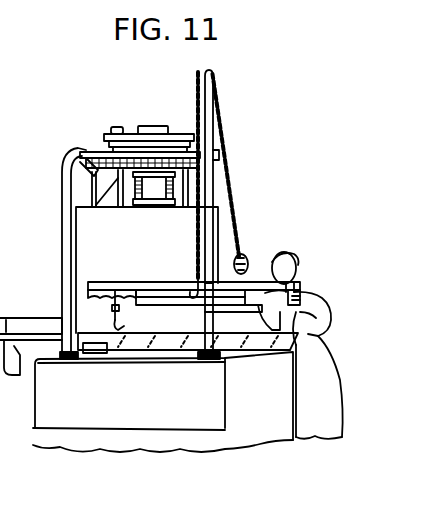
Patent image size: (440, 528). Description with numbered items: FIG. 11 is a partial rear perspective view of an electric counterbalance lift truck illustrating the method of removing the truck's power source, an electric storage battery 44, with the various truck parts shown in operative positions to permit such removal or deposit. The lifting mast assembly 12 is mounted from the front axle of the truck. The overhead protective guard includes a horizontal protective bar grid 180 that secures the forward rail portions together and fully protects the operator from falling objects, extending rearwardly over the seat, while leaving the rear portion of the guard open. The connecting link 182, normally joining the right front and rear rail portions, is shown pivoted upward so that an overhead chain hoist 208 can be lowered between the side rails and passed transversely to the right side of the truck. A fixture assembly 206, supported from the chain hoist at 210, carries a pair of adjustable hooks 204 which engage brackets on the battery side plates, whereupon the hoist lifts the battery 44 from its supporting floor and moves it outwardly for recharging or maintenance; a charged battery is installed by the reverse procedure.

The lifting mast assembly 12 is at (122, 116).
The storage battery 44 is at (272, 405).
The horizontal protective bar grid 180 is at (103, 153).
The connecting link 182 is at (213, 73).
The adjustable hooks 204 is at (111, 309).
The fixture assembly 206 is at (110, 282).
The chain hoist 208 is at (193, 226).
The chain hoist support point 210 is at (191, 268).